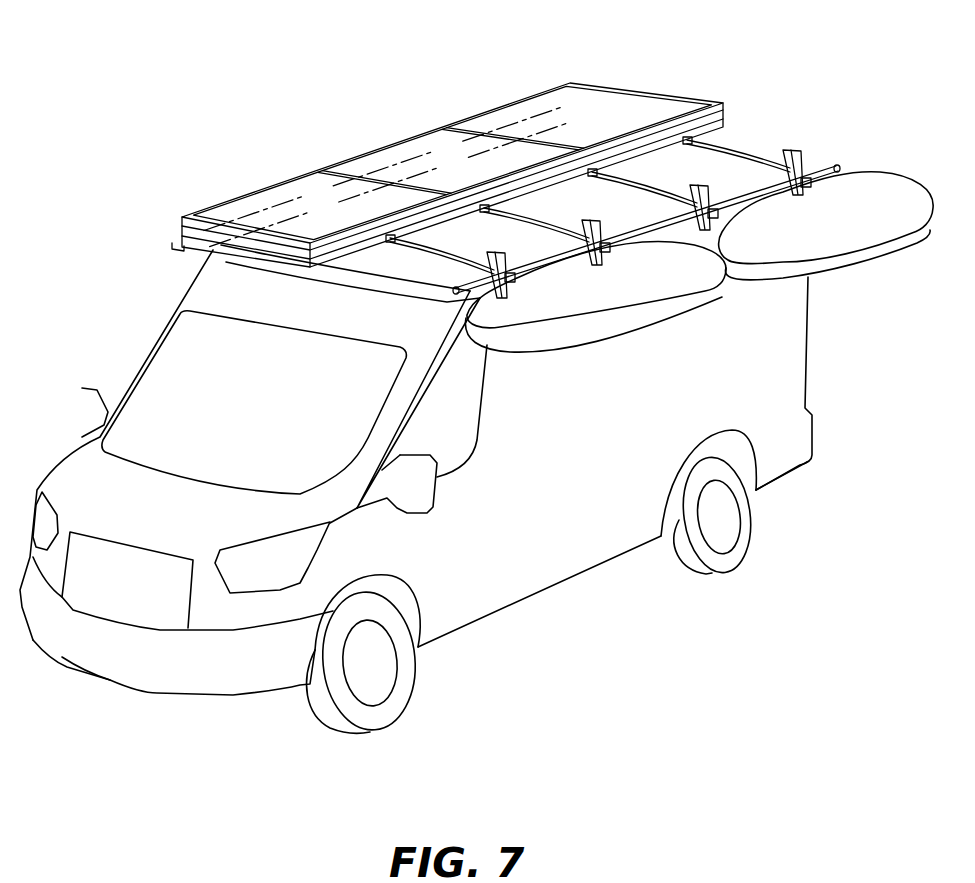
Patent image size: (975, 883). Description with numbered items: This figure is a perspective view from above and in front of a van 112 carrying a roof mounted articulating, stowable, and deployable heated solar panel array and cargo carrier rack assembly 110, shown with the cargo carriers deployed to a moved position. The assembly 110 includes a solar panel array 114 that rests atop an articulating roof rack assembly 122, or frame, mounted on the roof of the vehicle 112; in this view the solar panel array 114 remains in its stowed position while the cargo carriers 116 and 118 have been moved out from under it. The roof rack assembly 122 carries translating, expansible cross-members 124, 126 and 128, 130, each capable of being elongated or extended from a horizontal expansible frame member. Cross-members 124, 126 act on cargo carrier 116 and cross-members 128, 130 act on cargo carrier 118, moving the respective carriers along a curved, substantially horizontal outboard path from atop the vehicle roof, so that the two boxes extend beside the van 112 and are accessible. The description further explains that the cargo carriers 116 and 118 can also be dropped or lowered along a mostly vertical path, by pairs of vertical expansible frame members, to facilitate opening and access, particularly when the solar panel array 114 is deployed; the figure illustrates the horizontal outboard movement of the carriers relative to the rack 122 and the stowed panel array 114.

The roof mounted articulating, stowable, and deployable heated solar panel array and 110 is at (125, 170).
The van 112 is at (553, 540).
The solar panel array 114 is at (523, 100).
The cargo carrier 116 is at (622, 299).
The cargo carrier 118 is at (840, 231).
The articulating roof rack assembly 122 is at (777, 150).
The cross-member 124 is at (441, 265).
The cross-member 126 is at (530, 228).
The cross-member 128 is at (639, 199).
The cross-member 130 is at (731, 168).